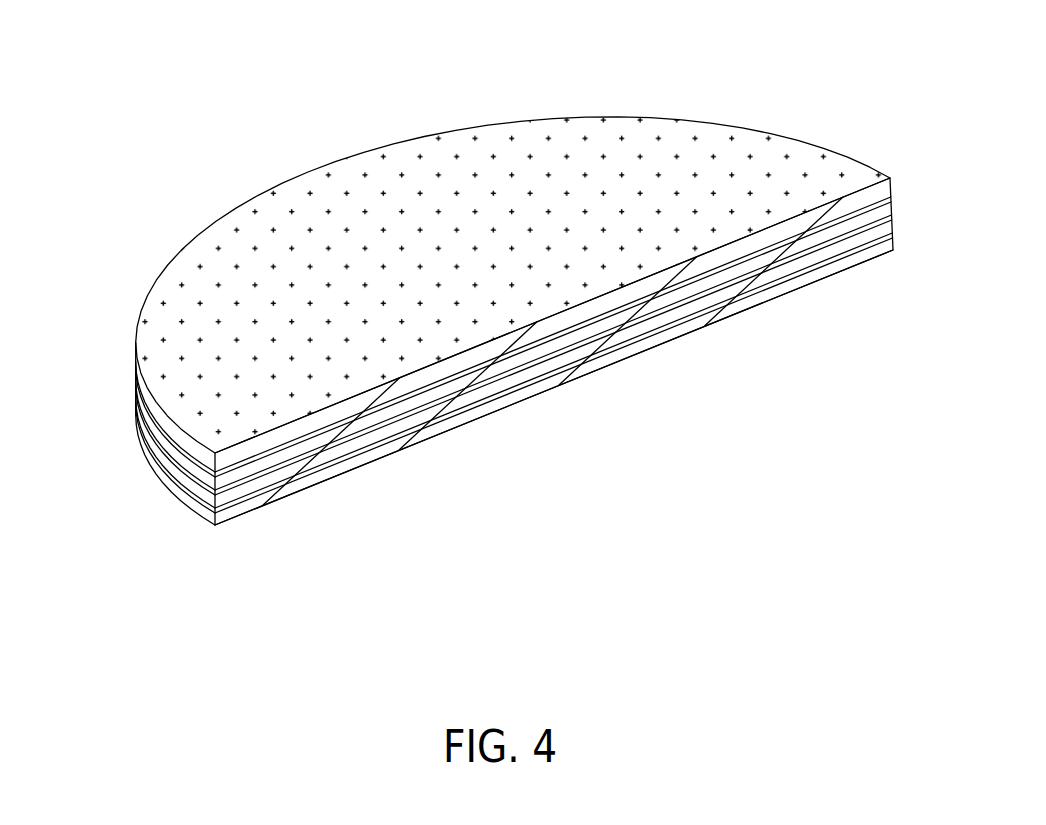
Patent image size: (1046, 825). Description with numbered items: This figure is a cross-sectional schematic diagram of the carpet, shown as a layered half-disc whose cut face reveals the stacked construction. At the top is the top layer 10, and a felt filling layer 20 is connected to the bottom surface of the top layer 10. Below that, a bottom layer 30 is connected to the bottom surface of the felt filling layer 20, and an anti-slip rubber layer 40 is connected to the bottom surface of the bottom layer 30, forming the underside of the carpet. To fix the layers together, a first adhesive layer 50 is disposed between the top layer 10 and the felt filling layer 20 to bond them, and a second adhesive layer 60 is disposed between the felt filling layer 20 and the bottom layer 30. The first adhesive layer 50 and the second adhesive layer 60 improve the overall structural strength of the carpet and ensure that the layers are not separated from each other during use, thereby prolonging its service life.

The top layer 10 is at (294, 256).
The felt filling layer 20 is at (610, 237).
The bottom layer 30 is at (273, 428).
The anti-slip rubber layer 40 is at (285, 555).
The first adhesive layer 50 is at (523, 413).
The second adhesive layer 60 is at (850, 310).